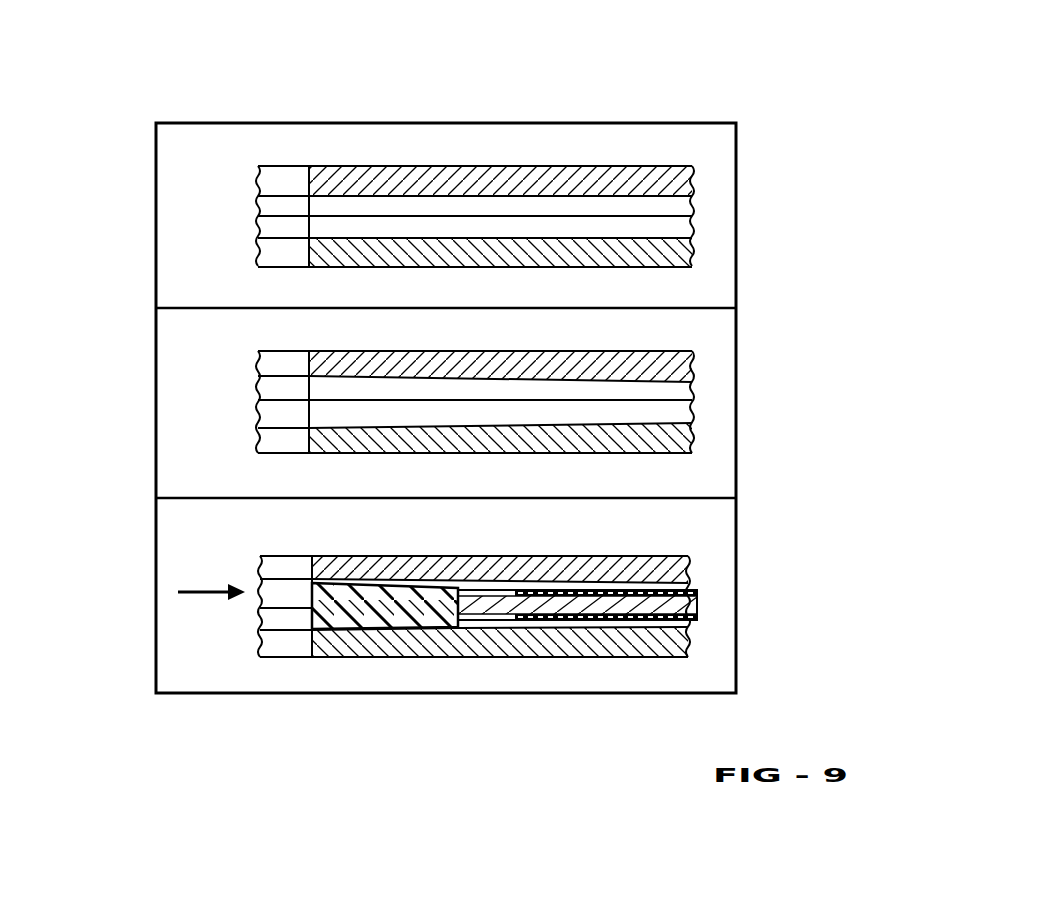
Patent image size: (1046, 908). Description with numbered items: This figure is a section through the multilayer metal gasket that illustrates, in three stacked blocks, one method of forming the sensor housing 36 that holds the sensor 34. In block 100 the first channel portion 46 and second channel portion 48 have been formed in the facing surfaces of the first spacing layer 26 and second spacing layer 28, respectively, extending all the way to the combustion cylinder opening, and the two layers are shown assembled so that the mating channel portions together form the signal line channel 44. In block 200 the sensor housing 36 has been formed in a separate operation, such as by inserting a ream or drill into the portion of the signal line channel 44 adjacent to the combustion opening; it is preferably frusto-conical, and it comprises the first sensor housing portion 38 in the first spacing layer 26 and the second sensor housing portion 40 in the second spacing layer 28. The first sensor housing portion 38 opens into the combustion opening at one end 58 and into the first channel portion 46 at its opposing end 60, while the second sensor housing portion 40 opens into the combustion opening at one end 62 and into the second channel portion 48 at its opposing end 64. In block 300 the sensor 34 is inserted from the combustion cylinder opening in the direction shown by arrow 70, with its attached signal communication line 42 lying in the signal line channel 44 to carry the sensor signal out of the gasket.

The first spacing layer 26 is at (380, 174).
The second spacing layer 28 is at (335, 250).
The sensor 34 is at (418, 590).
The sensor housing 36 is at (342, 387).
The first sensor housing portion 38 is at (338, 375).
The second sensor housing portion 40 is at (312, 454).
The signal communication line 42 is at (657, 597).
The signal line channel 44 is at (650, 410).
The first channel portion 46 is at (462, 190).
The second channel portion 48 is at (630, 236).
The one end of first sensor housing portion 58 is at (312, 583).
The opposing end of first sensor housing portion 60 is at (458, 585).
The one end of second sensor housing portion 62 is at (312, 630).
The opposing end of second sensor housing portion 64 is at (450, 652).
The arrow 70 is at (197, 591).
The block 100 is at (735, 233).
The block 200 is at (736, 430).
The block 300 is at (736, 607).